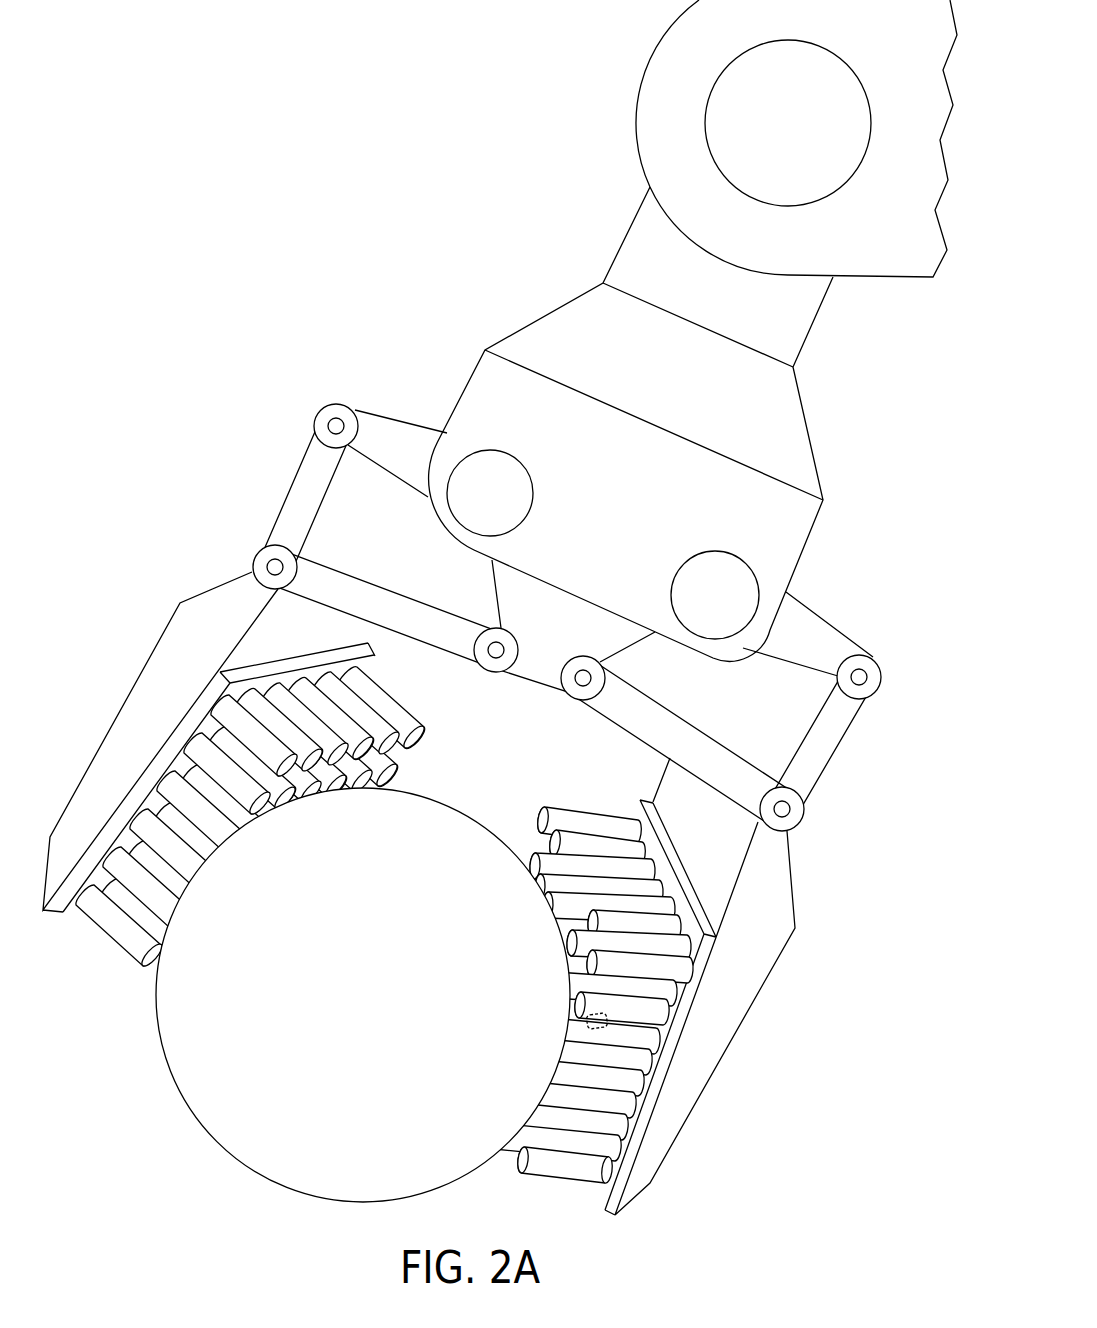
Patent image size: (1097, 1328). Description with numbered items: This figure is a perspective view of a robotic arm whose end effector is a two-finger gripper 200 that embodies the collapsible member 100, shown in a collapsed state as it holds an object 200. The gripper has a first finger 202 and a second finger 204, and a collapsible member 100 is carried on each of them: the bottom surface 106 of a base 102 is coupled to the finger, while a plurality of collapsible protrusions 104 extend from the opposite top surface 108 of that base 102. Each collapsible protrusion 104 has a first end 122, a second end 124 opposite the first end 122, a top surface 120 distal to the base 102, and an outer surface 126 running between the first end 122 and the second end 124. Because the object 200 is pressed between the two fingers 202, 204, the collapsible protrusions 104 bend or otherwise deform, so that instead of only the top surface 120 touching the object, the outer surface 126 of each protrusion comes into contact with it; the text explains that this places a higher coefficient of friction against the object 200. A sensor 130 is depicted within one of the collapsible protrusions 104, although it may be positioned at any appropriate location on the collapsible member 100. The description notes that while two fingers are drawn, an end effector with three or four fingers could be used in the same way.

The collapsible member 100 is at (400, 942).
The base 102 is at (256, 818).
The collapsible protrusions 104 is at (613, 980).
The bottom surface 106 is at (630, 1178).
The top surface 108 is at (225, 683).
The top surface 120 is at (416, 740).
The first end 122 is at (545, 1193).
The second end 124 is at (598, 1178).
The outer surface 126 is at (667, 997).
The sensor 130 is at (582, 1021).
The object / two-finger gripper 200 is at (480, 325).
The first finger 202 is at (773, 948).
The second finger 204 is at (124, 733).